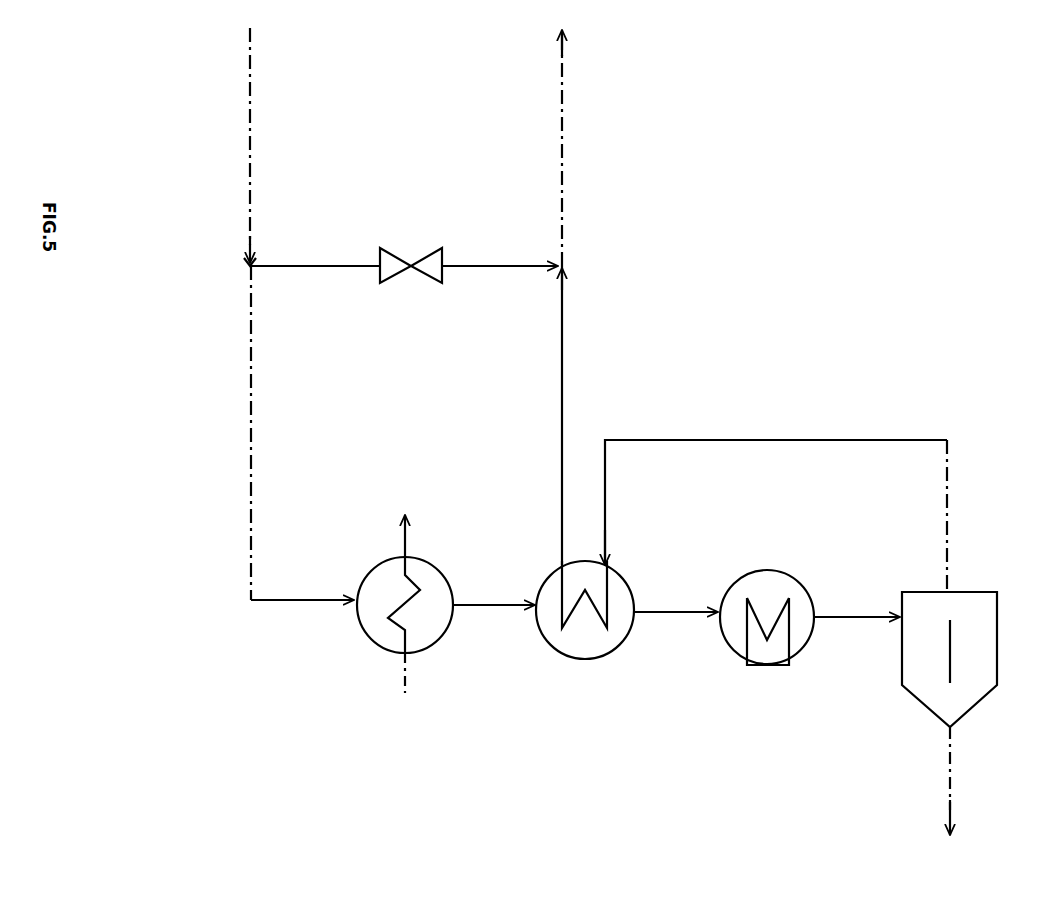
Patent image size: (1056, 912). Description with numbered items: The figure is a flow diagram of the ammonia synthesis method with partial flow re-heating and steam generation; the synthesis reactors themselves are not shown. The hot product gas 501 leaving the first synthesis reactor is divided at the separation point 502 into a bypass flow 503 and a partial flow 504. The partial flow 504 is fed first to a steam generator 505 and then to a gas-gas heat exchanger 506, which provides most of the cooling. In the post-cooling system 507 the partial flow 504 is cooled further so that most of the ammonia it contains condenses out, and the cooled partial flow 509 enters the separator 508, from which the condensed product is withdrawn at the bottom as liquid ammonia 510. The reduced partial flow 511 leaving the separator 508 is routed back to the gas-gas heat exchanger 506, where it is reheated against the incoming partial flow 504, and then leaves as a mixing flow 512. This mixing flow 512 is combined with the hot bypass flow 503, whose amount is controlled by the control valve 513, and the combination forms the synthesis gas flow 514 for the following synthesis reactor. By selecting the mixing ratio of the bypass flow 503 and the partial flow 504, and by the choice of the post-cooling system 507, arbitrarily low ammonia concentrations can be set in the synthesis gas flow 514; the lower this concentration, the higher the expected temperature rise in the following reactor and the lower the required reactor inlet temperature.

The hot product gas 501 is at (252, 118).
The separation point 502 is at (248, 264).
The bypass flow 503 is at (325, 259).
The partial flow 504 is at (253, 378).
The steam generator 505 is at (368, 632).
The gas-gas heat exchanger 506 is at (590, 658).
The post-cooling system 507 is at (740, 655).
The separator 508 is at (908, 688).
The cooled partial flow 509 is at (860, 612).
The liquid ammonia 510 is at (952, 790).
The reduced partial flow 511 is at (785, 440).
The mixing flow 512 is at (564, 343).
The control valve 513 is at (443, 246).
The synthesis gas flow 514 is at (564, 124).